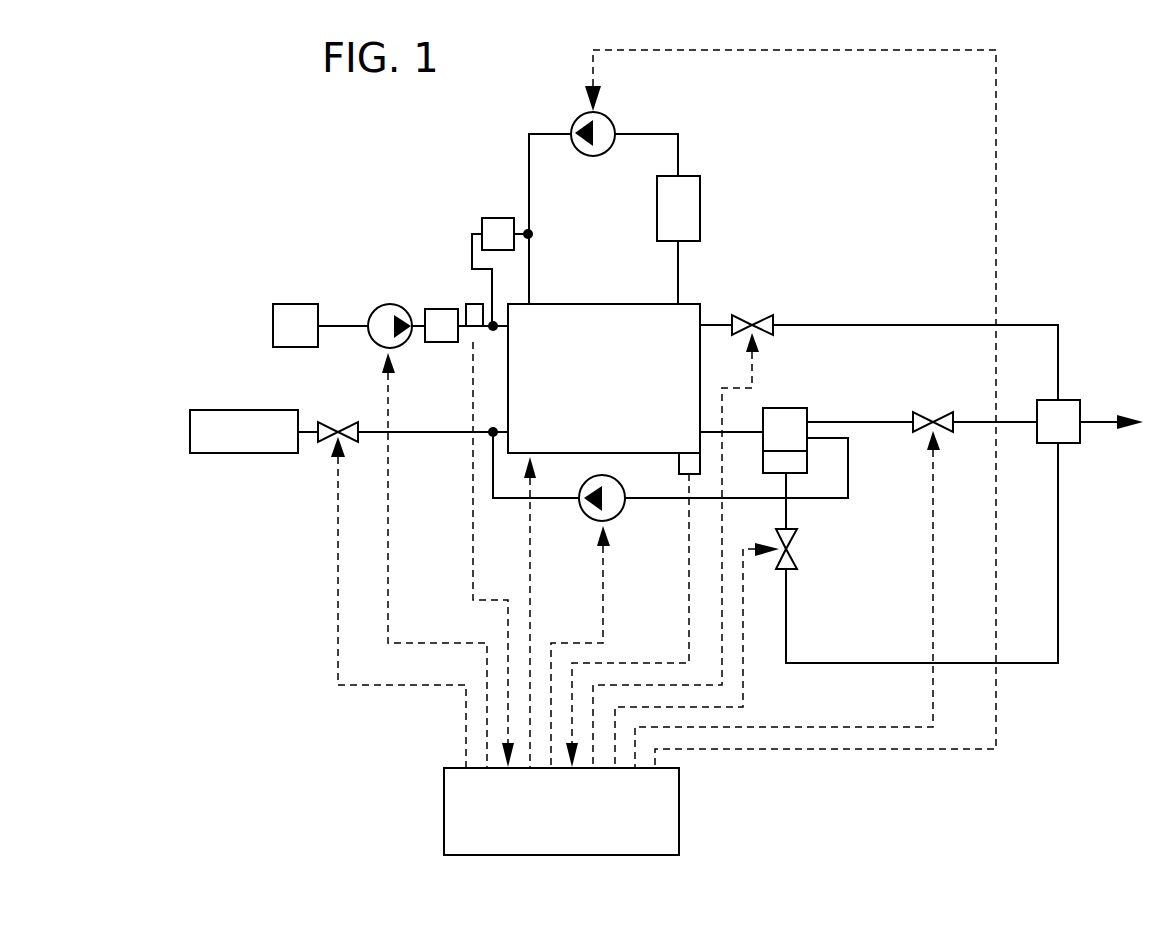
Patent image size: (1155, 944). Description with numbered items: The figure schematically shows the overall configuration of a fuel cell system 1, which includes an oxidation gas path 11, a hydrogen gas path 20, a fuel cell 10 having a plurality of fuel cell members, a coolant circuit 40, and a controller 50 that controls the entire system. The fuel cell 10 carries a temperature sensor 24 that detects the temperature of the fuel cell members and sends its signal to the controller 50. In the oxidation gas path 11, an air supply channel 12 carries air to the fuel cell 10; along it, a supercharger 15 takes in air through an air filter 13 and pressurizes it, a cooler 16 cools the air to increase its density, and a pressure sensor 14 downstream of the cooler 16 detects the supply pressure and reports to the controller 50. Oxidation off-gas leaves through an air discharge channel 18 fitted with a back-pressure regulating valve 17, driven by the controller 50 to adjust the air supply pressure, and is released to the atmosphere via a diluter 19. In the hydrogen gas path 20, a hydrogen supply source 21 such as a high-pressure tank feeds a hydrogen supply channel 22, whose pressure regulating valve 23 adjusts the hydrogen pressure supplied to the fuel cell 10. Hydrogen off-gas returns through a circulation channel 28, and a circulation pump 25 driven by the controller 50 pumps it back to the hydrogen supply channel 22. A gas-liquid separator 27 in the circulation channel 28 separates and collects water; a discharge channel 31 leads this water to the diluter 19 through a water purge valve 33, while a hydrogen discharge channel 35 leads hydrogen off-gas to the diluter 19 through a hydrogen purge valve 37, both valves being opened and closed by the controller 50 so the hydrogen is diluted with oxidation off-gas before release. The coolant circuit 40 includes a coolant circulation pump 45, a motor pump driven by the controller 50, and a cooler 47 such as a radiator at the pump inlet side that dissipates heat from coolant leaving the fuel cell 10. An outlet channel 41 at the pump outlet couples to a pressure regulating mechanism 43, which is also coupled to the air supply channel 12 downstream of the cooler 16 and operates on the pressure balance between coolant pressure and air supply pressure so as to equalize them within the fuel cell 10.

The fuel cell system 1 is at (1010, 797).
The fuel cell 10 is at (593, 304).
The oxidation gas path 11 is at (258, 305).
The air supply channel 12 is at (333, 325).
The air filter 13 is at (297, 304).
The pressure sensor 14 is at (475, 304).
The supercharger 15 is at (378, 303).
The cooler 16 is at (440, 342).
The back-pressure regulating valve 17 is at (770, 318).
The air discharge channel 18 is at (873, 325).
The diluter 19 is at (1068, 443).
The hydrogen gas path 20 is at (180, 409).
The hydrogen supply source 21 is at (262, 453).
The hydrogen supply channel 22 is at (368, 430).
The pressure regulating valve 23 is at (330, 423).
The temperature sensor 24 is at (679, 463).
The circulation pump 25 is at (618, 515).
The gas-liquid separator 27 is at (797, 407).
The circulation channel 28 is at (852, 493).
The discharge channel 31 is at (787, 600).
The water purge valve 33 is at (793, 550).
The hydrogen discharge channel 35 is at (857, 420).
The hydrogen purge valve 37 is at (947, 413).
The coolant circuit 40 is at (692, 127).
The outlet channel 41 is at (532, 190).
The pressure regulating mechanism 43 is at (492, 218).
The coolant circulation pump 45 is at (602, 113).
The cooler 47 is at (702, 203).
The controller 50 is at (680, 813).